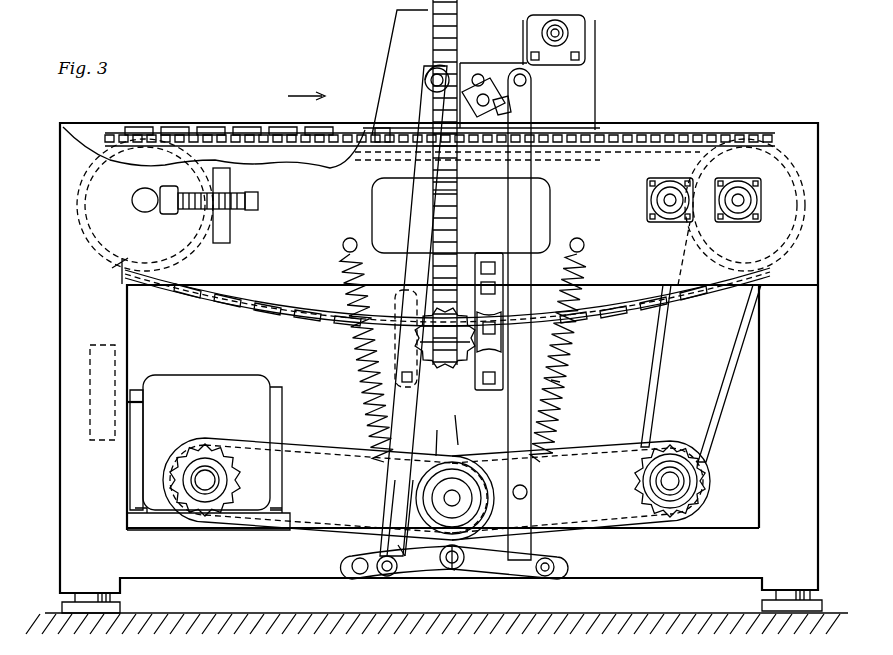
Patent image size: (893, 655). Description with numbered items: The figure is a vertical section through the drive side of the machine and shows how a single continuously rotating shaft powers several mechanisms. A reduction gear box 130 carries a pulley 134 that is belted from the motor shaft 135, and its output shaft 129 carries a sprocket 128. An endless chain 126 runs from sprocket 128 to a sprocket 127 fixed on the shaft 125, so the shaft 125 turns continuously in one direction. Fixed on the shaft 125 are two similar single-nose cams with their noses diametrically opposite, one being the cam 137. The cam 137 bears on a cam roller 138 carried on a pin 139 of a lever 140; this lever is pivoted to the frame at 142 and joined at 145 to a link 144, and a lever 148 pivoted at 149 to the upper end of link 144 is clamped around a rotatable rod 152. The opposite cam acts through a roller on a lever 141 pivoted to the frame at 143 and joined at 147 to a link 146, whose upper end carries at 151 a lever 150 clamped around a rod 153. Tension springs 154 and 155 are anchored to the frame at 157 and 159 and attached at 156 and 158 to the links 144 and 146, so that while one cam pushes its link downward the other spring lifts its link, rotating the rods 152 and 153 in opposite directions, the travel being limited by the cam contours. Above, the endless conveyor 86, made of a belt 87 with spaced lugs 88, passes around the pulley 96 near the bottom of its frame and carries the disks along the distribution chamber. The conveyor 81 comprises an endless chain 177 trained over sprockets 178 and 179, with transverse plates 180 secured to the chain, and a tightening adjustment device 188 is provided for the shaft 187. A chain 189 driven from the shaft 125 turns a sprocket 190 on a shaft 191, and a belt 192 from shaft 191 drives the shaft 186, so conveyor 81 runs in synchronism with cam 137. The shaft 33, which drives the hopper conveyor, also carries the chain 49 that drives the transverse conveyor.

The shaft 33 is at (437, 634).
The chain 49 is at (441, 388).
The conveyor 81 is at (224, 129).
The endless conveyor 86 is at (468, 244).
The belt 87 is at (418, 216).
The lugs 88 is at (432, 200).
The pulley 96 is at (465, 365).
The shaft 125 is at (454, 492).
The endless chain 126 is at (300, 445).
The sprocket 127 is at (458, 470).
The sprocket 128 is at (238, 487).
The output shaft 129 is at (205, 492).
The reduction gear box 130 is at (265, 396).
The pulley 134 is at (115, 380).
The motor shaft 135 is at (134, 390).
The single nose cam 137 is at (440, 450).
The cam roller 138 is at (458, 570).
The pin 139 is at (450, 572).
The lever 140 is at (405, 560).
The lever 141 is at (352, 552).
The pivot 142 is at (560, 560).
The pivot 143 is at (352, 578).
The link 144 is at (430, 160).
The pivot 145 is at (385, 578).
The link 146 is at (583, 153).
The pivot 147 is at (520, 578).
The lever 148 is at (430, 155).
The pivot 149 is at (430, 80).
The lever 150 is at (498, 72).
The pivot 151 is at (532, 88).
The rod 152 is at (452, 193).
The rod 153 is at (470, 75).
The tension spring 154 is at (352, 355).
The tension spring 155 is at (562, 378).
The spring attachment 156 is at (383, 500).
The spring anchor 157 is at (352, 238).
The spring attachment 158 is at (530, 492).
The spring anchor 159 is at (588, 245).
The endless chain 177 is at (250, 296).
The sprocket 178 is at (690, 153).
The sprocket 179 is at (120, 280).
The plates 180 is at (228, 305).
The shaft 186 is at (737, 192).
The shaft 187 is at (162, 215).
The tightening adjustment device 188 is at (232, 220).
The chain 189 is at (610, 448).
The sprocket 190 is at (700, 486).
The shaft 191 is at (672, 485).
The belt 192 is at (660, 375).